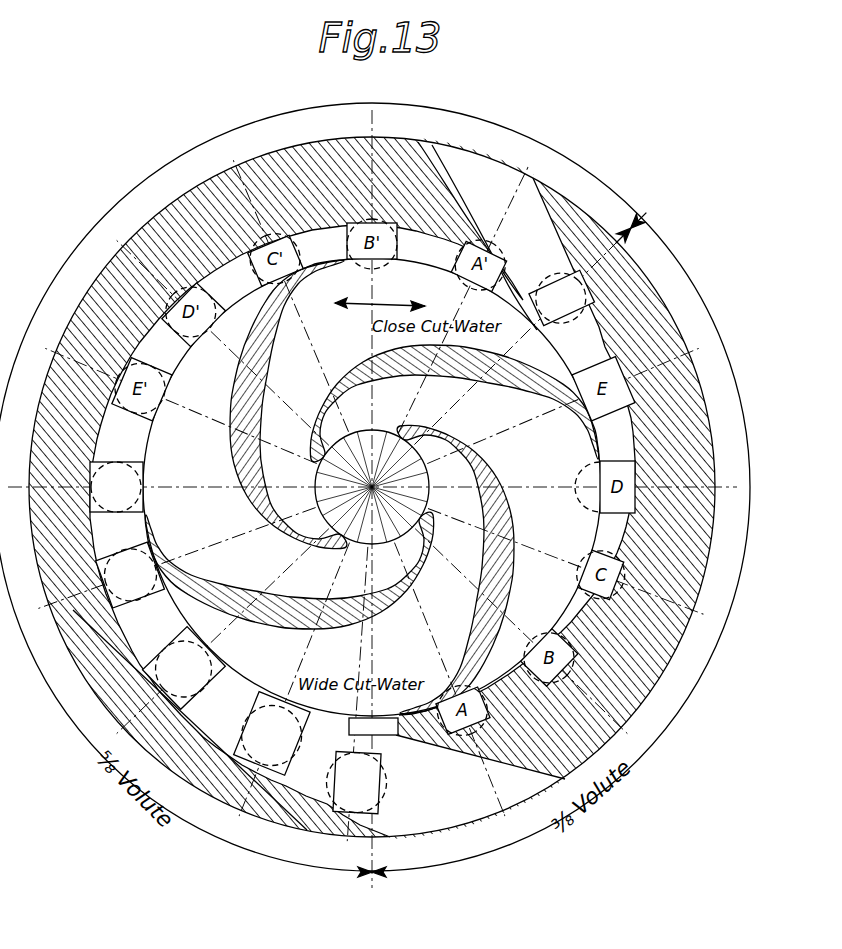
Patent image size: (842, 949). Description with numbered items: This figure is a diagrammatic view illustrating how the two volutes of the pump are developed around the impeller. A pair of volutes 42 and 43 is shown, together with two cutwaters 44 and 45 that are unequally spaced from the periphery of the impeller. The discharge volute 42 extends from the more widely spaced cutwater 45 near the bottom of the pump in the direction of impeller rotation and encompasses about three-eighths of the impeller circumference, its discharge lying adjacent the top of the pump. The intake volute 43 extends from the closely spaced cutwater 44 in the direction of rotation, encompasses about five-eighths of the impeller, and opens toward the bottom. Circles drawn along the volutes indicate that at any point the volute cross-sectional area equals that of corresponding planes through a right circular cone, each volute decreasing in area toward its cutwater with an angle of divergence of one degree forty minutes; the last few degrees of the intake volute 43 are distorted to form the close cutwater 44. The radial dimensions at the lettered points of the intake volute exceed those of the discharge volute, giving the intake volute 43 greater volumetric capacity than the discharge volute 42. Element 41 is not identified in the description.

The impeller vane 41 is at (456, 557).
The discharge volute 42 is at (606, 444).
The intake volute 43 is at (143, 440).
The close cutwater 44 is at (525, 305).
The widely spaced cutwater 45 is at (372, 739).